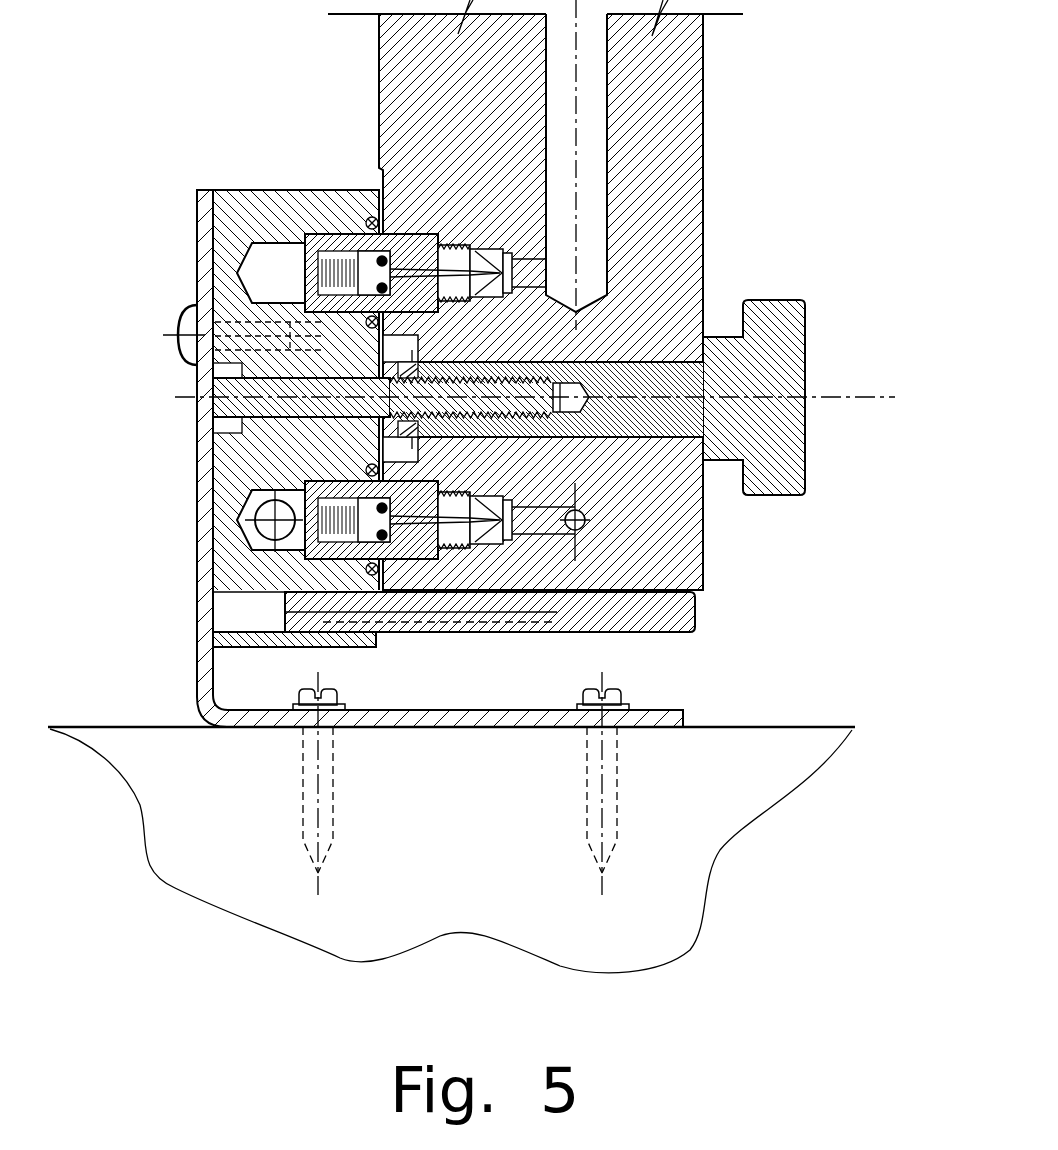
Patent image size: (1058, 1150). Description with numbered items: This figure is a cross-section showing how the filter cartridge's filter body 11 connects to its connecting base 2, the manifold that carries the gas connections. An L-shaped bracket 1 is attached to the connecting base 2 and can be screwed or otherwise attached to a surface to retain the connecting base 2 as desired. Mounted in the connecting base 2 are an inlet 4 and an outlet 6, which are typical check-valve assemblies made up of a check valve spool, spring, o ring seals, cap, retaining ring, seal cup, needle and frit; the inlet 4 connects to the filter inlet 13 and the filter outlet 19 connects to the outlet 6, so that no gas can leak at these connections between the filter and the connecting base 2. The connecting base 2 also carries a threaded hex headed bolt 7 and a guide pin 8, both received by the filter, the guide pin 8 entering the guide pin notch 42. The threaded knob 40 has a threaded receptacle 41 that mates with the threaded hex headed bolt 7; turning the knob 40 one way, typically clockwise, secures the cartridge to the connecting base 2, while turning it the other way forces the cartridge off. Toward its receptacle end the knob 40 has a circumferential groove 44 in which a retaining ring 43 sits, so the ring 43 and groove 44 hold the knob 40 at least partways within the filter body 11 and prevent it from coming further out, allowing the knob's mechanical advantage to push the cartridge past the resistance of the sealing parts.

The bracket 1 is at (205, 570).
The connecting base 2 is at (237, 460).
The inlet 4 is at (482, 253).
The outlet 6 is at (493, 535).
The threaded hex headed bolt 7 is at (520, 438).
The guide pin 8 is at (352, 622).
The filter body 11 is at (680, 140).
The filter inlet 13 is at (533, 250).
The filter outlet 19 is at (540, 528).
The threaded knob 40 is at (793, 353).
The threaded receptacle 41 is at (537, 355).
The guide pin notch 42 is at (700, 603).
The retaining ring 43 is at (398, 368).
The circumferential groove 44 is at (398, 368).